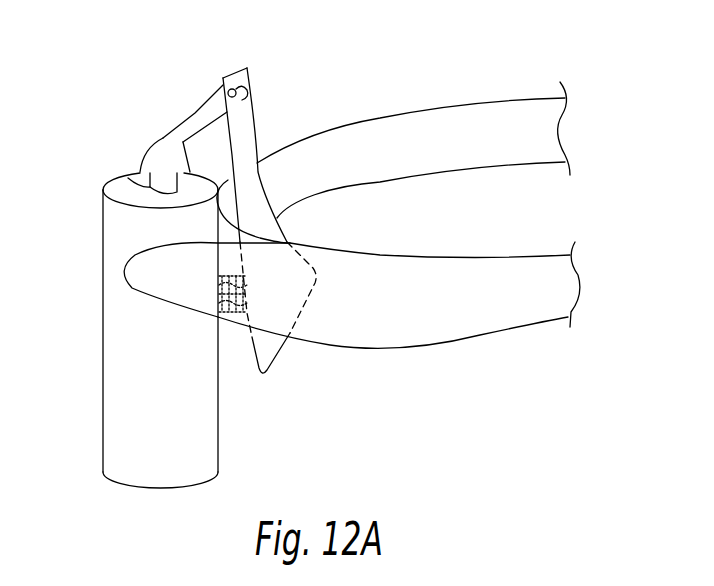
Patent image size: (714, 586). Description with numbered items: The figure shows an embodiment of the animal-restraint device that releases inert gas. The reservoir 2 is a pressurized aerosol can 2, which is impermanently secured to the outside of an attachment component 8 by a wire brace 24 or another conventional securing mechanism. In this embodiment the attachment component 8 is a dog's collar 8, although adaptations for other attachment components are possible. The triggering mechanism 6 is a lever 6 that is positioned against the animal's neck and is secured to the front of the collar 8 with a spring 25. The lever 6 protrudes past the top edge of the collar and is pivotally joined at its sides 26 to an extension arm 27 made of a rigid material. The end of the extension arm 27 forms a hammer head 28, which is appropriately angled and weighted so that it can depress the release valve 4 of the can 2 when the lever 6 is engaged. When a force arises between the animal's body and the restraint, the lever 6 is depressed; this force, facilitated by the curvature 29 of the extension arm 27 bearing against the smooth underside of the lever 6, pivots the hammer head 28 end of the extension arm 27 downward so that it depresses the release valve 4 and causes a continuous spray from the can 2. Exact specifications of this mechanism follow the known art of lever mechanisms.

The reservoir 2 is at (125, 391).
The release valve 4 is at (120, 175).
The triggering mechanism 6 is at (287, 237).
The attachment component 8 is at (458, 323).
The wire brace 24 is at (148, 273).
The spring 25 is at (222, 318).
The sides 26 is at (246, 97).
The extension arm 27 is at (196, 115).
The hammer head 28 is at (162, 161).
The curvature 29 is at (278, 83).